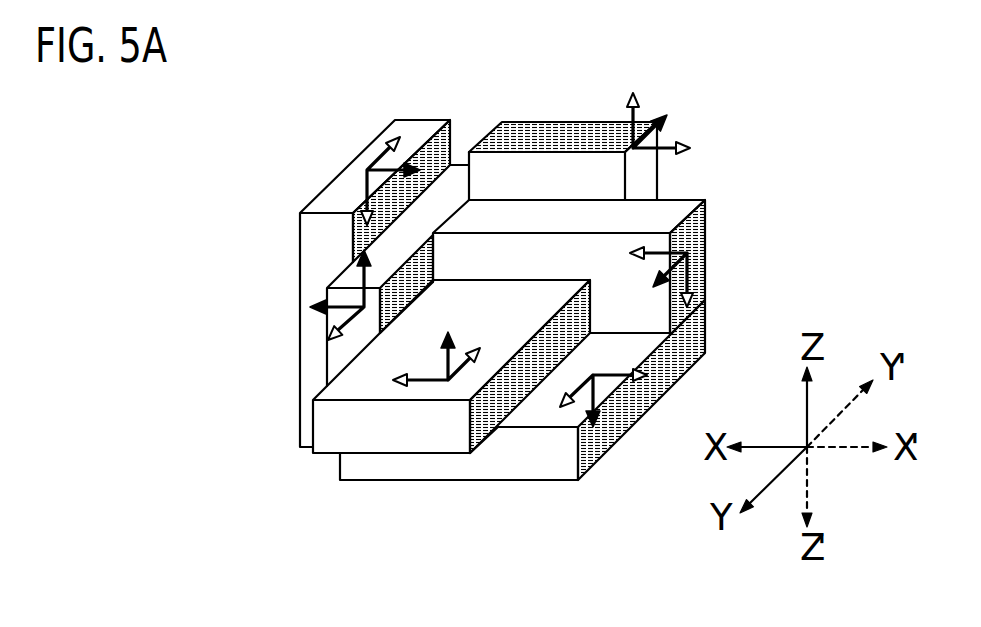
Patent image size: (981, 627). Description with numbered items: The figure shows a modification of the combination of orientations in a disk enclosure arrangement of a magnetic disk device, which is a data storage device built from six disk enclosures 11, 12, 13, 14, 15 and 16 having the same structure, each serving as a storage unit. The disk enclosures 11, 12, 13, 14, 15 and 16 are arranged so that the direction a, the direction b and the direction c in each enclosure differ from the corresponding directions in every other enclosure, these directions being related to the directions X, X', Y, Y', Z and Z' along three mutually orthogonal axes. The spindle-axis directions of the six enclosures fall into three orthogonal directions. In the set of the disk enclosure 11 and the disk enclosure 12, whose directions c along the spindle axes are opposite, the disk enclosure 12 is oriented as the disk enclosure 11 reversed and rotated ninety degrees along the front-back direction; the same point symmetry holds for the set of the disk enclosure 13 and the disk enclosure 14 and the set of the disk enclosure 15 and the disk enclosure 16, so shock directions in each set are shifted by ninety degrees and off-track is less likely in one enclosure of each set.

The disk enclosure 11 is at (422, 453).
The disk enclosure 12 is at (517, 480).
The disk enclosure 13 is at (706, 258).
The disk enclosure 14 is at (598, 122).
The disk enclosure 15 is at (327, 357).
The disk enclosure 16 is at (300, 245).